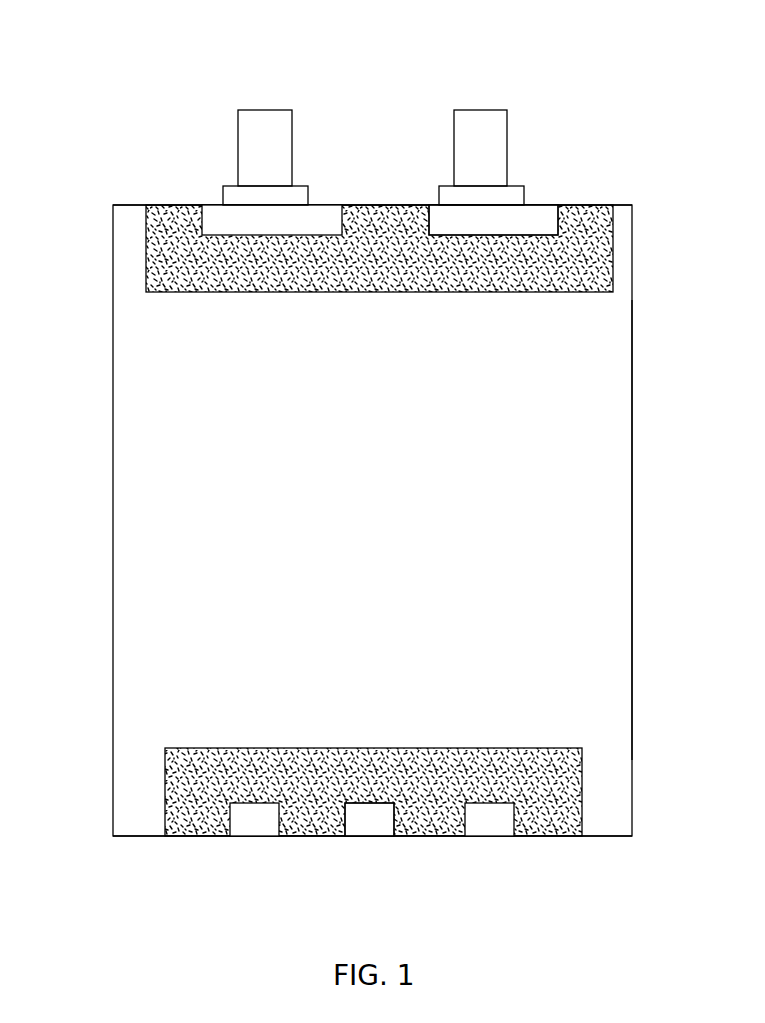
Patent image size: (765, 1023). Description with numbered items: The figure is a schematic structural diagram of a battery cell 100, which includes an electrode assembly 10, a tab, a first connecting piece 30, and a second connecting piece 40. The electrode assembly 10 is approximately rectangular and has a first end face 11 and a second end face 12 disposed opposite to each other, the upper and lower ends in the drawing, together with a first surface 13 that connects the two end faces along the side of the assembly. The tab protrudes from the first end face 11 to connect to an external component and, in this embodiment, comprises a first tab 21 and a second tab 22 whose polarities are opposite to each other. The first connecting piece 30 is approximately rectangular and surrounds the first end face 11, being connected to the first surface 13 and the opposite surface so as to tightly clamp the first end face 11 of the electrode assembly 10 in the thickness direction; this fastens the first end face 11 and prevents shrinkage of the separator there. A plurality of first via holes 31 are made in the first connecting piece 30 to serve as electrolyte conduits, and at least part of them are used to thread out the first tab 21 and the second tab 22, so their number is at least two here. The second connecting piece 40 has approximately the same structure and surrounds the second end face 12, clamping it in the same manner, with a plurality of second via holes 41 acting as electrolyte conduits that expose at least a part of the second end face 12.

The battery cell 100 is at (203, 43).
The electrode assembly 10 is at (113, 548).
The first end face 11 is at (147, 213).
The second end face 12 is at (155, 838).
The first surface 13 is at (604, 423).
The first tab 21 is at (270, 118).
The second tab 22 is at (490, 123).
The first connecting piece 30 is at (163, 252).
The first via hole 31 is at (537, 222).
The second connecting piece 40 is at (193, 776).
The second via hole 41 is at (370, 838).